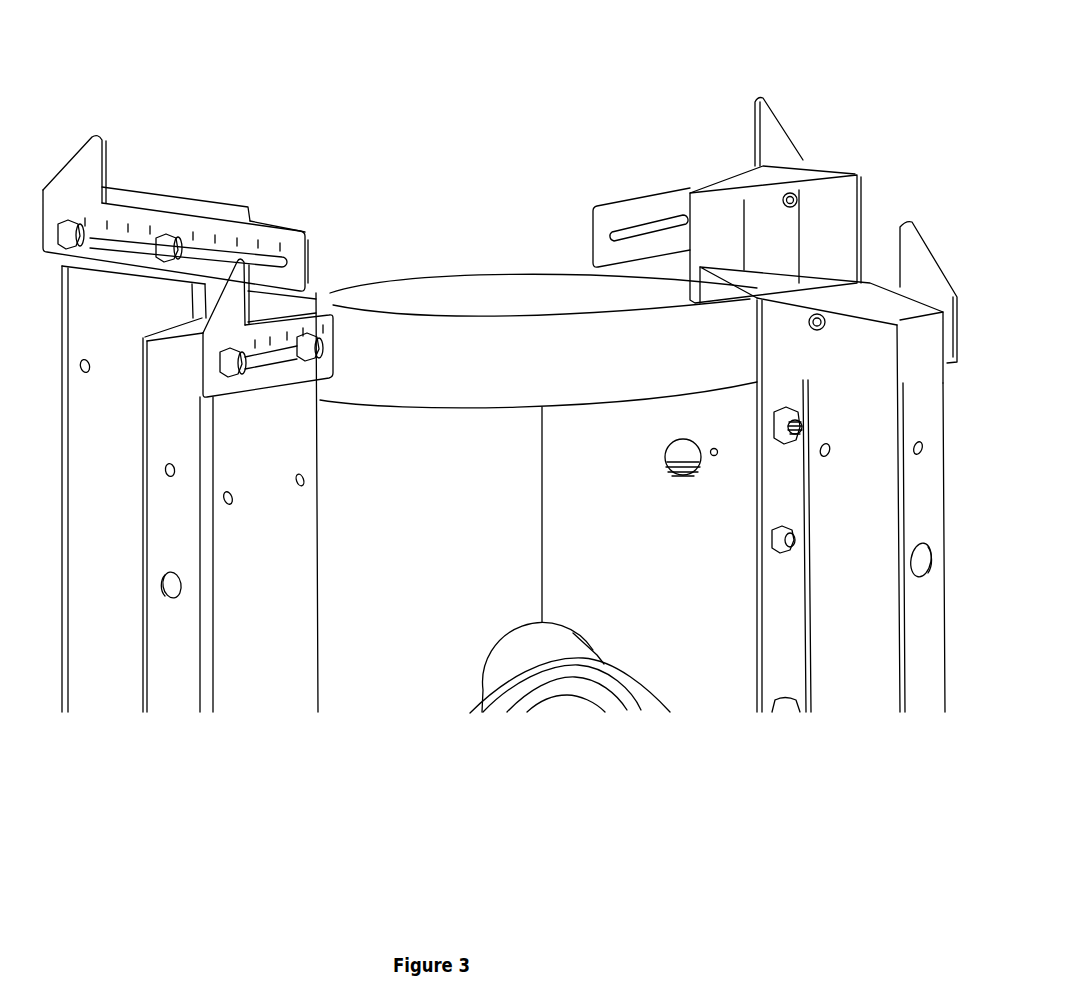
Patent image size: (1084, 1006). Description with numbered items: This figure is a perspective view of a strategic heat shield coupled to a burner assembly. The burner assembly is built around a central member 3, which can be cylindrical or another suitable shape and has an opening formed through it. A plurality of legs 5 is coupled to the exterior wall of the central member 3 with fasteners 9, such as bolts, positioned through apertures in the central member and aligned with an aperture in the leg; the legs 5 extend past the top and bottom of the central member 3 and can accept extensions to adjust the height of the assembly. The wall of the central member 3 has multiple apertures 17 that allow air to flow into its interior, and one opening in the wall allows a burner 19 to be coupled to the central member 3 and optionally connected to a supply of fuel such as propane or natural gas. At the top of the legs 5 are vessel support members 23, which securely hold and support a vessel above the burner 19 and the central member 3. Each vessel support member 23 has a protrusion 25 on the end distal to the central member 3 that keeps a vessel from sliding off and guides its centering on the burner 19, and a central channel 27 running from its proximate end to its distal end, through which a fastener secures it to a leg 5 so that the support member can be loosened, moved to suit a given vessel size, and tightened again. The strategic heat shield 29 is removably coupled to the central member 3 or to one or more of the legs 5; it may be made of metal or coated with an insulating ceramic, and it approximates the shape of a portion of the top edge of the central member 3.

The central member 3 is at (476, 514).
The legs 5 is at (503, 489).
The fasteners 9 is at (790, 406).
The apertures 17 is at (676, 446).
The burner 19 is at (516, 668).
The vessel support member 23 is at (300, 237).
The protrusion 25 is at (92, 138).
The central channel 27 is at (222, 250).
The strategic heat shield 29 is at (538, 341).